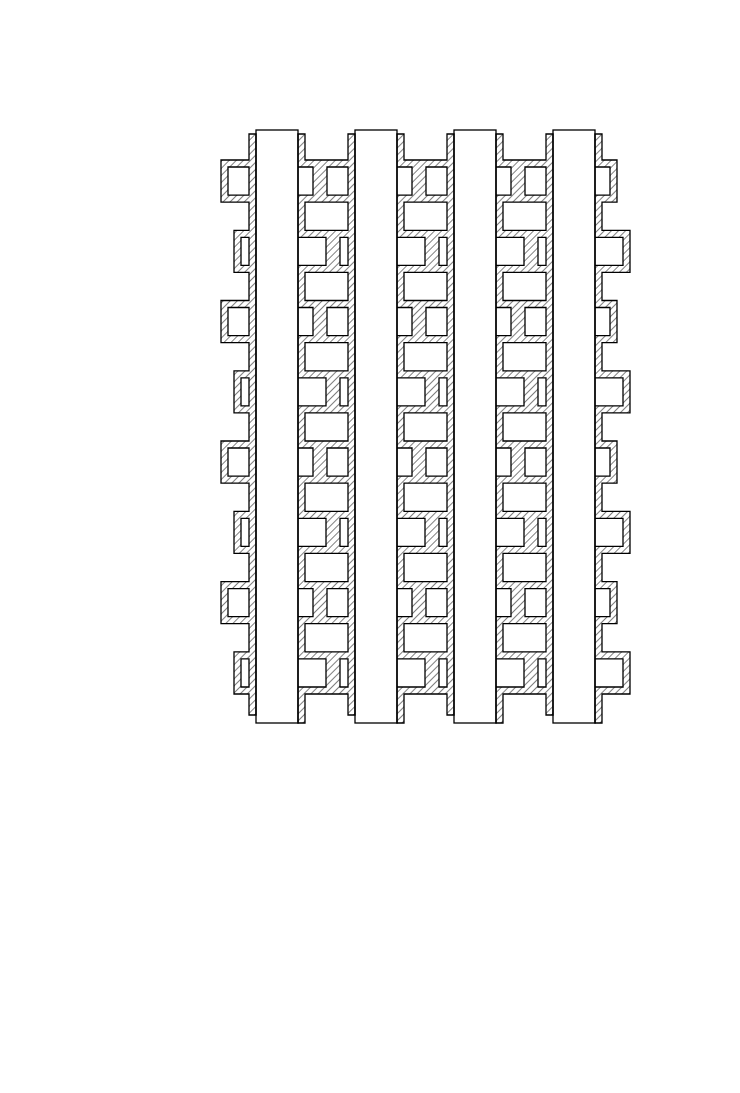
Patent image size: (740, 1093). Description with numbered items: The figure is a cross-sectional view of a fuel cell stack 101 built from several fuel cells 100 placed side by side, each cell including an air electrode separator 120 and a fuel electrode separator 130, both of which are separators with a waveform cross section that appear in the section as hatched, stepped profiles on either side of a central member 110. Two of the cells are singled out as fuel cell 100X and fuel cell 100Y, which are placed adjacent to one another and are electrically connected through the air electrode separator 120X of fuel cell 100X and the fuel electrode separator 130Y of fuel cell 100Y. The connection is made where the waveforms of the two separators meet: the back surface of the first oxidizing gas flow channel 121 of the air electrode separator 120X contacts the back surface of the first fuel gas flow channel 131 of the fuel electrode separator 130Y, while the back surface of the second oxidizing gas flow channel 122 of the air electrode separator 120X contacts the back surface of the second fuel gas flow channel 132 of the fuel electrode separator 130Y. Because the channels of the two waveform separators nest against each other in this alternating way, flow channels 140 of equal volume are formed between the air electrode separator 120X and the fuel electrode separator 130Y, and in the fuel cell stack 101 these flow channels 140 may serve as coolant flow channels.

The fuel cell stack 101 is at (362, 485).
The fuel cell 100 is at (519, 127).
The fuel cell 100X is at (420, 127).
The fuel cell 100Y is at (321, 127).
The core plate 110 is at (427, 470).
The air electrode separator 120 is at (358, 471).
The air electrode separator 120X is at (223, 473).
The first oxidizing gas flow channel 121 is at (195, 428).
The second oxidizing gas flow channel 122 is at (195, 428).
The fuel electrode separator 130 is at (642, 452).
The fuel electrode separator 130Y is at (223, 474).
The first fuel gas flow channel 131 is at (195, 428).
The second fuel gas flow channel 132 is at (195, 428).
The flow channel 140 is at (326, 633).